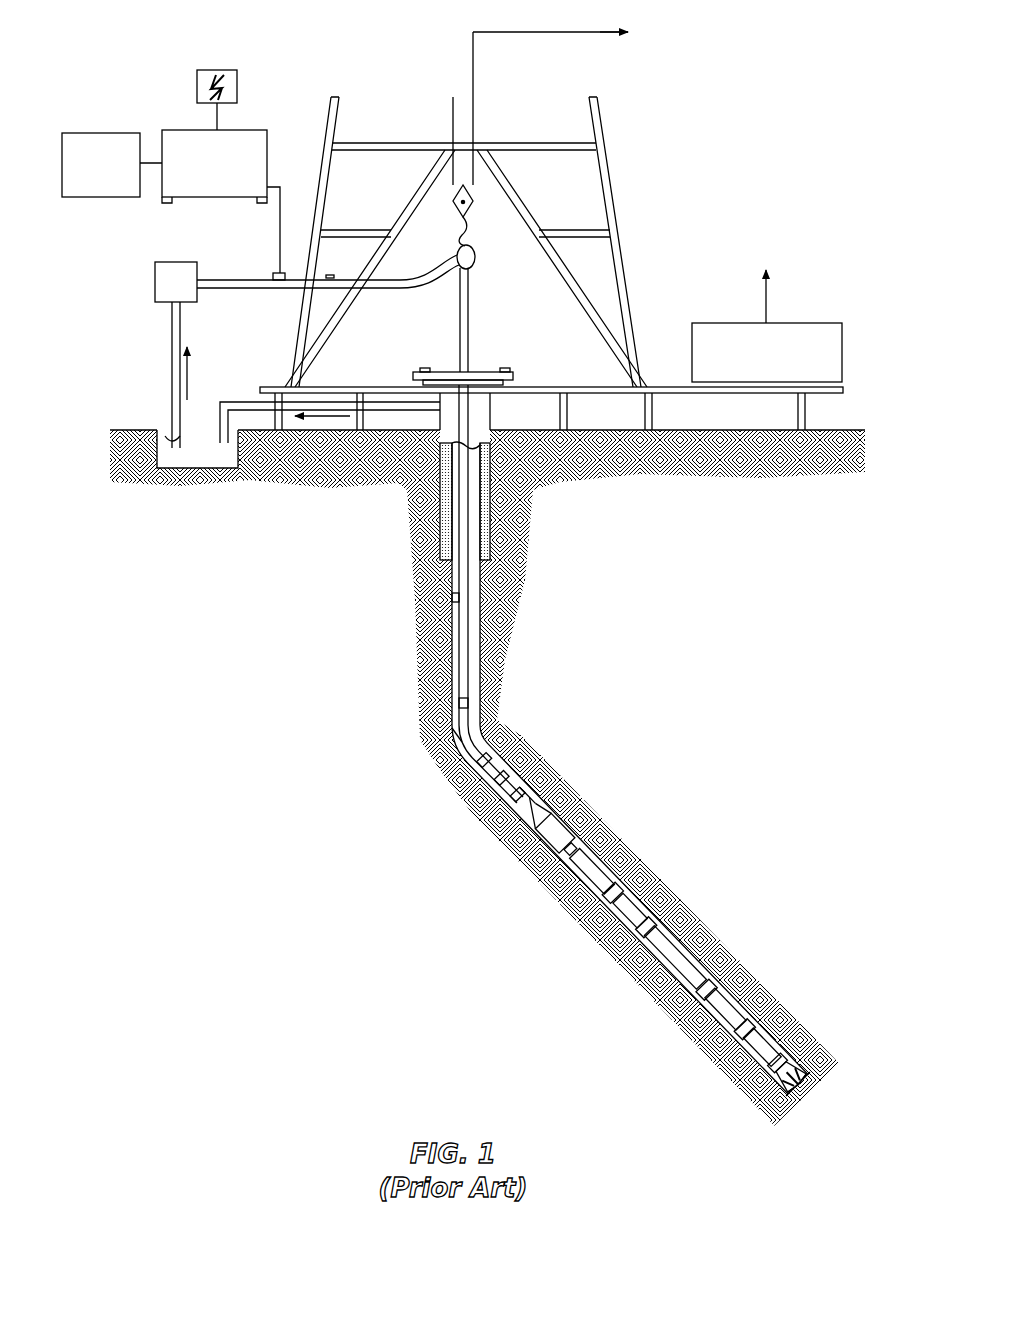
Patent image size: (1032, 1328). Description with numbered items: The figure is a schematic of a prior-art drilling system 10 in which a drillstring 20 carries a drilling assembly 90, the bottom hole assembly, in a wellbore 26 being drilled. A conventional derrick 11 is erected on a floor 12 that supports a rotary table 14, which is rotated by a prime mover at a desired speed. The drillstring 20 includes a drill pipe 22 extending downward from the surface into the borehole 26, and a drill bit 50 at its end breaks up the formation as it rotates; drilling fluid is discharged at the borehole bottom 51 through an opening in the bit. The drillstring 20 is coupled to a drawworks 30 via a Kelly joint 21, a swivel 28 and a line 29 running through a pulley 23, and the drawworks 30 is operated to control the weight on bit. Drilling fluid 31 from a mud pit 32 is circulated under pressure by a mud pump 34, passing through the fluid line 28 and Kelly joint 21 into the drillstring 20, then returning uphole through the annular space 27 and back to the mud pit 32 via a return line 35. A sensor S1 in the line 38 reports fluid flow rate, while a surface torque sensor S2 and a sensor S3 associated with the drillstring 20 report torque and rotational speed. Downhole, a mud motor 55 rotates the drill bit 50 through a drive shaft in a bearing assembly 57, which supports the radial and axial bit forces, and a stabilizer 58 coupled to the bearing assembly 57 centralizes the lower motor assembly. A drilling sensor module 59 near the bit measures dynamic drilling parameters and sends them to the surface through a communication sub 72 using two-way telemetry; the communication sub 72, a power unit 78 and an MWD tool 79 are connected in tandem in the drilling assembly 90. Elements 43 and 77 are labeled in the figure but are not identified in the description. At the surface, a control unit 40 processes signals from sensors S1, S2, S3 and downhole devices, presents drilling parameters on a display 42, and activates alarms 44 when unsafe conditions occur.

The drilling system 10 is at (395, 43).
The derrick 11 is at (619, 243).
The floor 12 is at (638, 383).
The rotary table 14 is at (477, 367).
The drillstring 20 is at (477, 647).
The Kelly joint 21 is at (470, 300).
The drill pipe 22 is at (447, 627).
The pulley 23 is at (465, 202).
The wellbore 26 is at (490, 728).
The annular space 27 is at (507, 758).
The swivel 28 is at (457, 263).
The line 29 is at (473, 113).
The drawworks 30 is at (807, 323).
The drilling fluid 31 is at (165, 438).
The mud pit 32 is at (188, 463).
The mud pump 34 is at (170, 262).
The return line 35 is at (407, 408).
The line 38 is at (277, 288).
The surface control unit 40 is at (200, 130).
The display/monitor 42 is at (212, 70).
The signal line 43 is at (275, 273).
The alarms 44 is at (105, 198).
The drill bit 50 is at (805, 1035).
The borehole bottom 51 is at (783, 1097).
The downhole motor 55 is at (663, 902).
The bearing assembly 57 is at (773, 997).
The stabilizer 58 is at (793, 1010).
The drilling sensor module 59 is at (772, 1050).
The communication sub 72 is at (452, 732).
The measurement tool 77 is at (550, 845).
The power unit 78 is at (470, 770).
The MWD tool 79 is at (493, 790).
The drilling assembly 90 is at (687, 808).
The sensor S1 is at (330, 275).
The surface torque sensor S2 is at (507, 367).
The sensor S3 is at (423, 368).